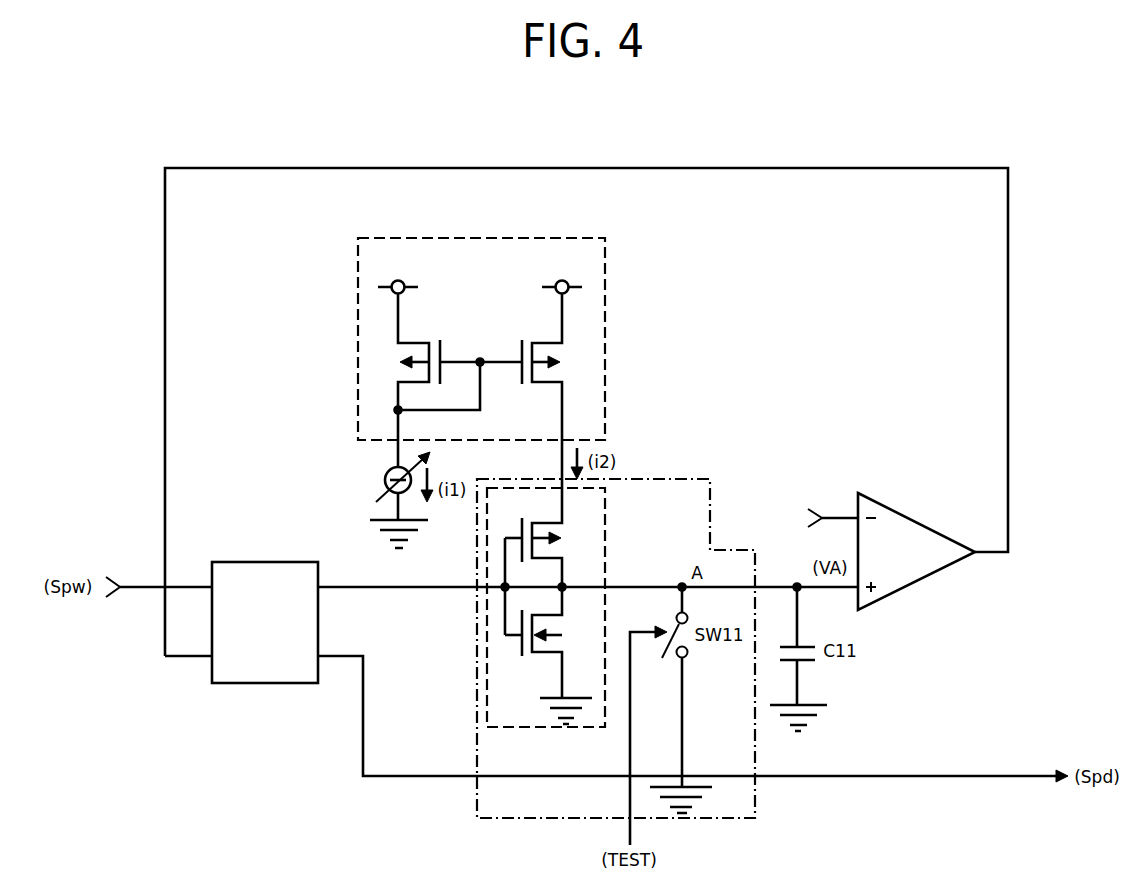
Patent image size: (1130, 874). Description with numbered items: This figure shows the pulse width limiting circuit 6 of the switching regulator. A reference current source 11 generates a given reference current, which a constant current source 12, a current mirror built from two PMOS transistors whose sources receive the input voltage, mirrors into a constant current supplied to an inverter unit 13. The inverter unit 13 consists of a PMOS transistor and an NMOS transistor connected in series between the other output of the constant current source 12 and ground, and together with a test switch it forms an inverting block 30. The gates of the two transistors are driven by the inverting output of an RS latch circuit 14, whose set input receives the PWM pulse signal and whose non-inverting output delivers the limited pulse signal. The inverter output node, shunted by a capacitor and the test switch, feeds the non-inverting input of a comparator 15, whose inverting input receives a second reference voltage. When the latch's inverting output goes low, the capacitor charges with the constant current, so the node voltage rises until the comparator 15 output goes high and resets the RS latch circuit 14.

The pulse width limiting circuit 6 is at (858, 141).
The reference current source 11 is at (386, 470).
The constant current source 12 is at (583, 238).
The inverter unit 13 is at (578, 732).
The RS latch circuit 14 is at (302, 562).
The comparator 15 is at (908, 513).
The inverting block 30 is at (675, 477).